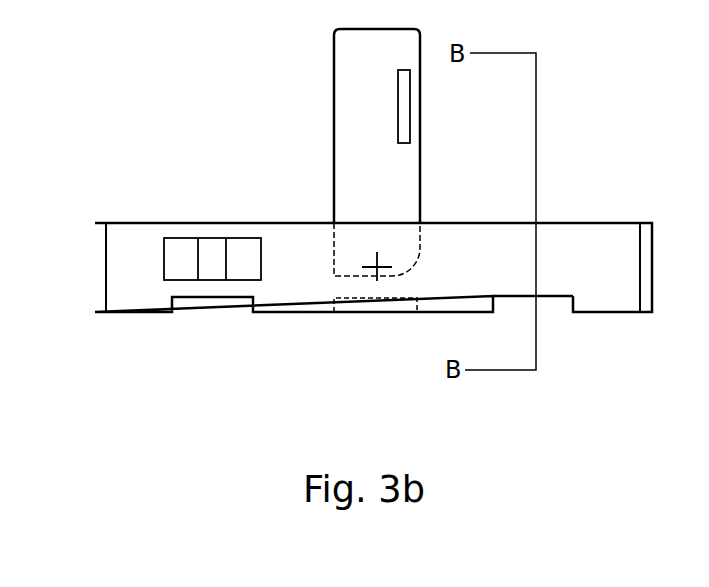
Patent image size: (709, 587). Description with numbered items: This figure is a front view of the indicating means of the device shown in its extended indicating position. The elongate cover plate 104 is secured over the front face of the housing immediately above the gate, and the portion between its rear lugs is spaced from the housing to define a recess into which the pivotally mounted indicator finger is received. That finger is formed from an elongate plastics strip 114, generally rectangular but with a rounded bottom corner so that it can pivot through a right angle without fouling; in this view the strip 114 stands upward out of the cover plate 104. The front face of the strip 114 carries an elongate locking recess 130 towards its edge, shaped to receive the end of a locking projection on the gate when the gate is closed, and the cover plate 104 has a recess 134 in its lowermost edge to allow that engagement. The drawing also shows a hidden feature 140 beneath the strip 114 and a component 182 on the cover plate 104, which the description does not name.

The cover plate 104 is at (580, 242).
The elongate plastics strip 114 is at (393, 193).
The locking recess 130 is at (403, 130).
The recess 134 is at (545, 298).
The hidden feature 140 is at (382, 303).
The connector 182 is at (202, 280).